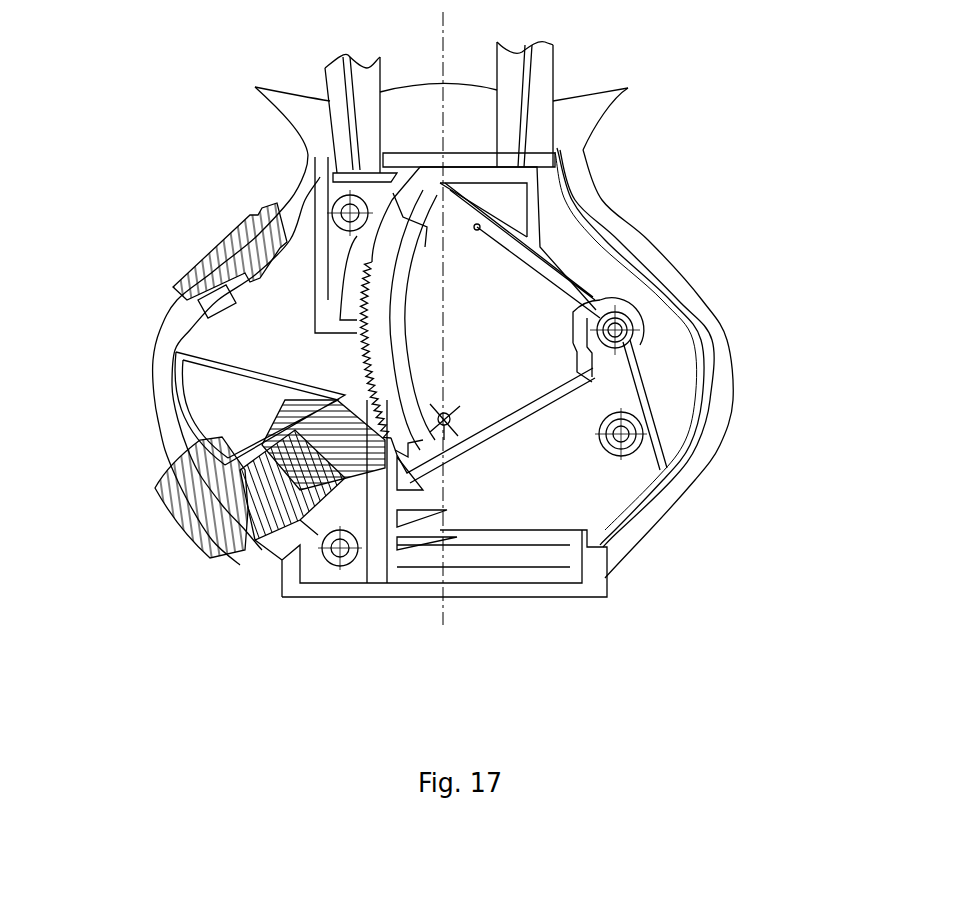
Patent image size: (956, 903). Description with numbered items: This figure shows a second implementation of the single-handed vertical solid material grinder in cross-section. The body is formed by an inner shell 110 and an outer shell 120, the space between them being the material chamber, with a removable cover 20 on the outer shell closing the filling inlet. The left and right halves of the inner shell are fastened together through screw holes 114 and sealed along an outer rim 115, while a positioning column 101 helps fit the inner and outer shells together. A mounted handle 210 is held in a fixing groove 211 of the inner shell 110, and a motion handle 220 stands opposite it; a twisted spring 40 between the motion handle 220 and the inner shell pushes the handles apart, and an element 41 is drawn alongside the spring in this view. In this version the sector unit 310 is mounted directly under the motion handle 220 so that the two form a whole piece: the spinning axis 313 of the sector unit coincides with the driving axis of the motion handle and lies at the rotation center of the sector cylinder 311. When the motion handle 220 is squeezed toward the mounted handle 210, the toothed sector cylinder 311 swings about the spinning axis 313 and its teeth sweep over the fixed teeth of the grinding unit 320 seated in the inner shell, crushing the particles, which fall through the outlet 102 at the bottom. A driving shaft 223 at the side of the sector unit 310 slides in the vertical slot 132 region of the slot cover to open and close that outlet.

The removable cover 20 is at (235, 248).
The twisted spring 40 is at (650, 370).
The link bar 41 is at (478, 227).
The positioning column 101 is at (320, 371).
The outlet 102 is at (385, 585).
The inner shell 110 is at (690, 312).
The screw hole 114 is at (346, 212).
The outer rim 115 is at (692, 431).
The outer shell 120 is at (622, 226).
The vertical slot 132 is at (180, 500).
The mounted handle 210 is at (360, 80).
The fixing groove 211 is at (335, 176).
The motion handle 220 is at (524, 54).
The driving shaft 223 is at (448, 433).
The sector unit 310 is at (375, 355).
The sector cylinder 311 is at (402, 205).
The spinning axis 313 is at (630, 330).
The grinding unit 320 is at (322, 478).